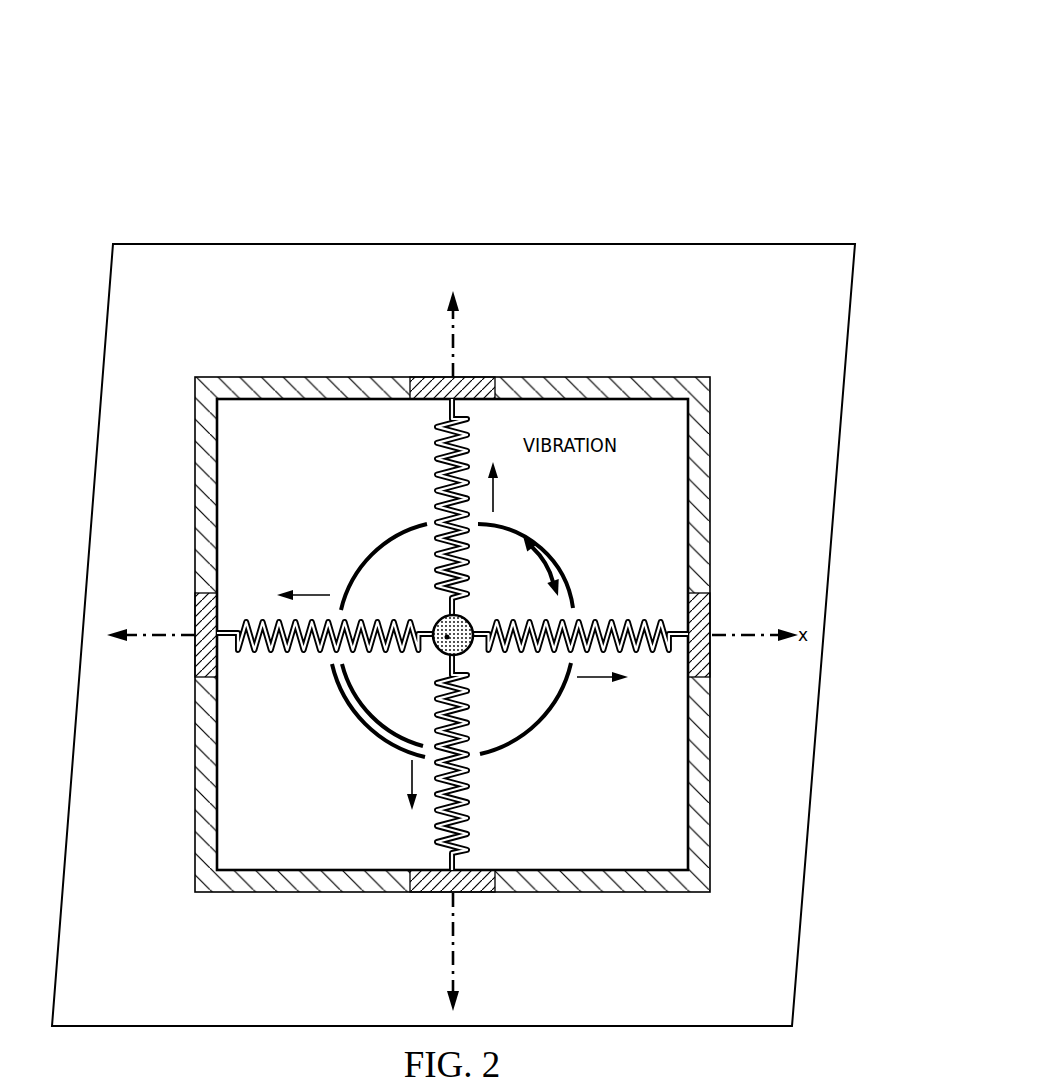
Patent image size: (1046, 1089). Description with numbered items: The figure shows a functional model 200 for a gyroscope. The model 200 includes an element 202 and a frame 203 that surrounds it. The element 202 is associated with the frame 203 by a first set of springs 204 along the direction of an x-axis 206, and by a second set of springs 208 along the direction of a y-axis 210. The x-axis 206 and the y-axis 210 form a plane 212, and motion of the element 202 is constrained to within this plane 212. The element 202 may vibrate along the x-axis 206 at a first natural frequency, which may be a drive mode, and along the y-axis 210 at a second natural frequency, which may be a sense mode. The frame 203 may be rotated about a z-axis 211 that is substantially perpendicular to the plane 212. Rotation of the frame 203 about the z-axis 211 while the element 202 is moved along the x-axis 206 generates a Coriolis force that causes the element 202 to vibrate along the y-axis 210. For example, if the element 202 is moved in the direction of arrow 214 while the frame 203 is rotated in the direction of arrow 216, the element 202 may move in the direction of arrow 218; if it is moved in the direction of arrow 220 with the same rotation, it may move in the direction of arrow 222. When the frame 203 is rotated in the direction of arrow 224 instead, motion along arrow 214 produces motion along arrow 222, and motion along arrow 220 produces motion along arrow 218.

The model 200 is at (453, 539).
The plane 212 is at (692, 240).
The frame 203 is at (575, 377).
The y-axis 210 is at (450, 342).
The first set of springs 204 is at (297, 653).
The x-axis 206 is at (745, 637).
The second set of springs 208 is at (440, 495).
The element 202 is at (445, 629).
The z-axis 211 is at (435, 648).
The arrow 224 is at (377, 550).
The arrow 216 is at (517, 745).
The arrow 222 is at (495, 493).
The arrow 220 is at (307, 594).
The arrow 214 is at (597, 678).
The arrow 218 is at (408, 781).